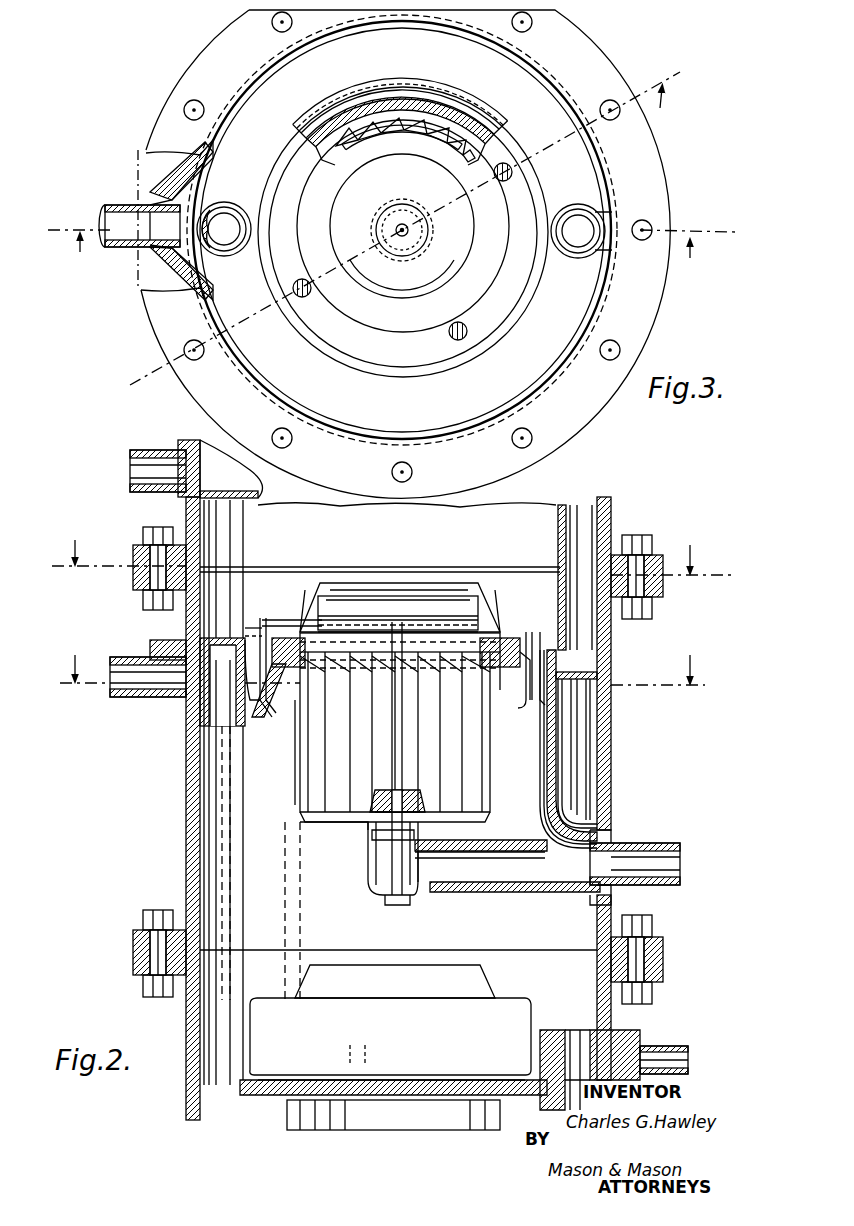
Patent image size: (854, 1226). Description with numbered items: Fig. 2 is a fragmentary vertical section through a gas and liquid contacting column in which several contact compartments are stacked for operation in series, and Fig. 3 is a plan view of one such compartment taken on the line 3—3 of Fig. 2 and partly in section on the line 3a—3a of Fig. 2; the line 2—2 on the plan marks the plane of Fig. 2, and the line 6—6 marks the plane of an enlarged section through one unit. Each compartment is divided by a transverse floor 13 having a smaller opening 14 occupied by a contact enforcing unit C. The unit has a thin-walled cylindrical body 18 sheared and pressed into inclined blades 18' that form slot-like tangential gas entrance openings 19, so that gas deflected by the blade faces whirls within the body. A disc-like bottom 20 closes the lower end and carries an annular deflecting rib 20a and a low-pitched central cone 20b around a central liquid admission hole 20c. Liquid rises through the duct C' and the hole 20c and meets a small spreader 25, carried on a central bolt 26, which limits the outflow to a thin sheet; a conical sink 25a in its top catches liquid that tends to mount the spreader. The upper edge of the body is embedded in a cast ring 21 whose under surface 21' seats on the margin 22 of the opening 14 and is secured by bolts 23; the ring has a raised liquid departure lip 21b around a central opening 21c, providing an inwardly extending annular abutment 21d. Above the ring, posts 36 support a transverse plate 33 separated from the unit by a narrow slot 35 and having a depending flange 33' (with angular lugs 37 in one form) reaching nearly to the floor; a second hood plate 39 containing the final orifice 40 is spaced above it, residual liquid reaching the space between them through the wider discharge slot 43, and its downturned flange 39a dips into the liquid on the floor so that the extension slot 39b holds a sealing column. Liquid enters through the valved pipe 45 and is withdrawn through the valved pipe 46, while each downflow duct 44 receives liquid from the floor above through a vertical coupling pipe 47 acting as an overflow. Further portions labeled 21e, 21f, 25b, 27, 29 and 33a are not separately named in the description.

In FIG. 3, the section line 2- 2 is at (392, 239).
In FIG. 2, the section line 3— 3 is at (393, 563).
In FIG. 2, the section line 3a— 3a is at (382, 674).
In FIG. 3, the section line 6— 6 is at (402, 227).
In FIG. 3, the transverse floor 13 is at (402, 230).
In FIG. 2, the transverse floor 13 is at (258, 700).
In FIG. 2, the opening 14 is at (266, 632).
In FIG. 3, the body portion 18 is at (401, 140).
In FIG. 2, the body portion 18 is at (407, 891).
In FIG. 2, the blades 18' is at (276, 754).
In FIG. 3, the tangential gas entrance openings 19 is at (440, 126).
In FIG. 2, the tangential gas entrance openings 19 is at (298, 770).
In FIG. 2, the bottom-closing part 20 is at (370, 842).
In FIG. 3, the annular deflecting rib 20a is at (417, 140).
In FIG. 3, the low pitched cone 20b is at (402, 226).
In FIG. 2, the central liquid admission hole 20c is at (372, 885).
In FIG. 2, the top member 21 is at (291, 648).
In FIG. 2, the under surface 21' is at (516, 643).
In FIG. 2, the liquid departure lip 21b is at (398, 618).
In FIG. 2, the central opening 21c is at (400, 642).
In FIG. 2, the annular abutment 21d is at (470, 660).
In FIG. 2, the shell ring 21e is at (396, 649).
In FIG. 2, the shell lip 21f is at (455, 650).
In FIG. 2, the margin 22 is at (541, 644).
In FIG. 3, the bolts 23 is at (478, 320).
In FIG. 3, the spreader 25 is at (410, 250).
In FIG. 2, the spreader 25 is at (418, 796).
In FIG. 3, the conical sink 25a is at (425, 233).
In FIG. 2, the conical sink 25a is at (392, 798).
In FIG. 2, the shaft collar 25b is at (416, 793).
In FIG. 3, the central bolt 26 is at (398, 238).
In FIG. 2, the central bolt 26 is at (404, 888).
In FIG. 2, the bearing support 27 is at (368, 835).
In FIG. 3, the casing wall 29 is at (425, 100).
In FIG. 2, the casing wall 29 is at (580, 730).
In FIG. 2, the transverse plate 33 is at (406, 588).
In FIG. 3, the downturned flange 33' is at (418, 129).
In FIG. 2, the downturned flange 33' is at (408, 680).
In FIG. 3, the ratchet ring portion 33a is at (336, 118).
In FIG. 2, the annular slot 35 is at (410, 630).
In FIG. 2, the posts 36 is at (340, 640).
In FIG. 2, the angular lugs 37 is at (386, 612).
In FIG. 2, the second hood plate 39 is at (480, 585).
In FIG. 3, the downturned flange 39a is at (476, 115).
In FIG. 2, the downturned flange 39a is at (262, 622).
In FIG. 3, the extension slot 39b is at (392, 95).
In FIG. 2, the extension slot 39b is at (249, 634).
In FIG. 2, the final orifice 40 is at (398, 599).
In FIG. 2, the liquid discharge slot 43 is at (399, 579).
In FIG. 2, the vertical extension 44 is at (597, 764).
In FIG. 3, the valved pipe 45 is at (139, 226).
In FIG. 2, the valved pipe 45 is at (145, 470).
In FIG. 2, the valved pipe 46 is at (140, 696).
In FIG. 2, the vertical coupling pipe 47 is at (186, 840).
In FIG. 3, the contact enforcing unit C is at (354, 226).
In FIG. 2, the contact enforcing unit C is at (411, 925).
In FIG. 2, the liquid duct C' is at (480, 860).